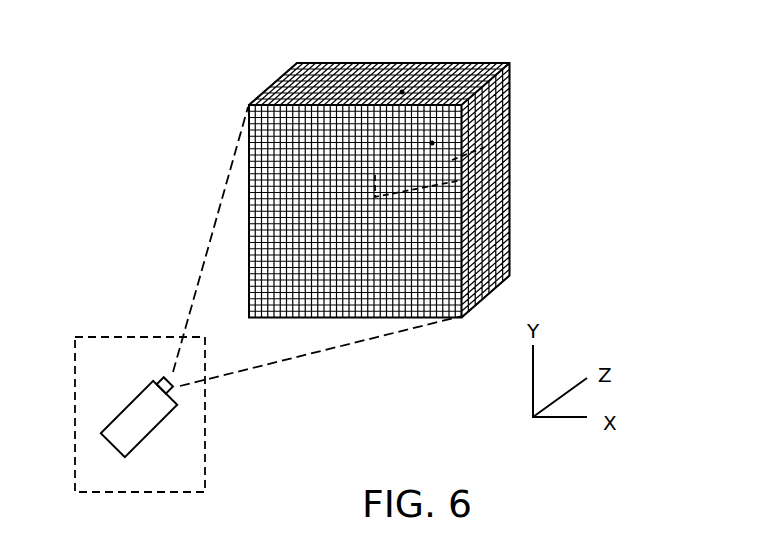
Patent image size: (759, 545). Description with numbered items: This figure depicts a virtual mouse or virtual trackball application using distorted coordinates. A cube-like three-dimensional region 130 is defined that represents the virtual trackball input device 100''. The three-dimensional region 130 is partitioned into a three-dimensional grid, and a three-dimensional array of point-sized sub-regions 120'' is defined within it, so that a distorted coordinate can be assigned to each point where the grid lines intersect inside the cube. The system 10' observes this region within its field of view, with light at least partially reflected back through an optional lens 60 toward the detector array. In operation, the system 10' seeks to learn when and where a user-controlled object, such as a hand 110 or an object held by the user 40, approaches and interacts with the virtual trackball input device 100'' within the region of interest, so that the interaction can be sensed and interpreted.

The virtual trackball input device 100'' is at (321, 250).
The cube-like three-dimensional region 130 is at (337, 63).
The sub-regions 120'' is at (467, 87).
The user 40 is at (462, 180).
The hand 110 is at (430, 172).
The system 10' is at (136, 396).
The lens 60 is at (170, 380).